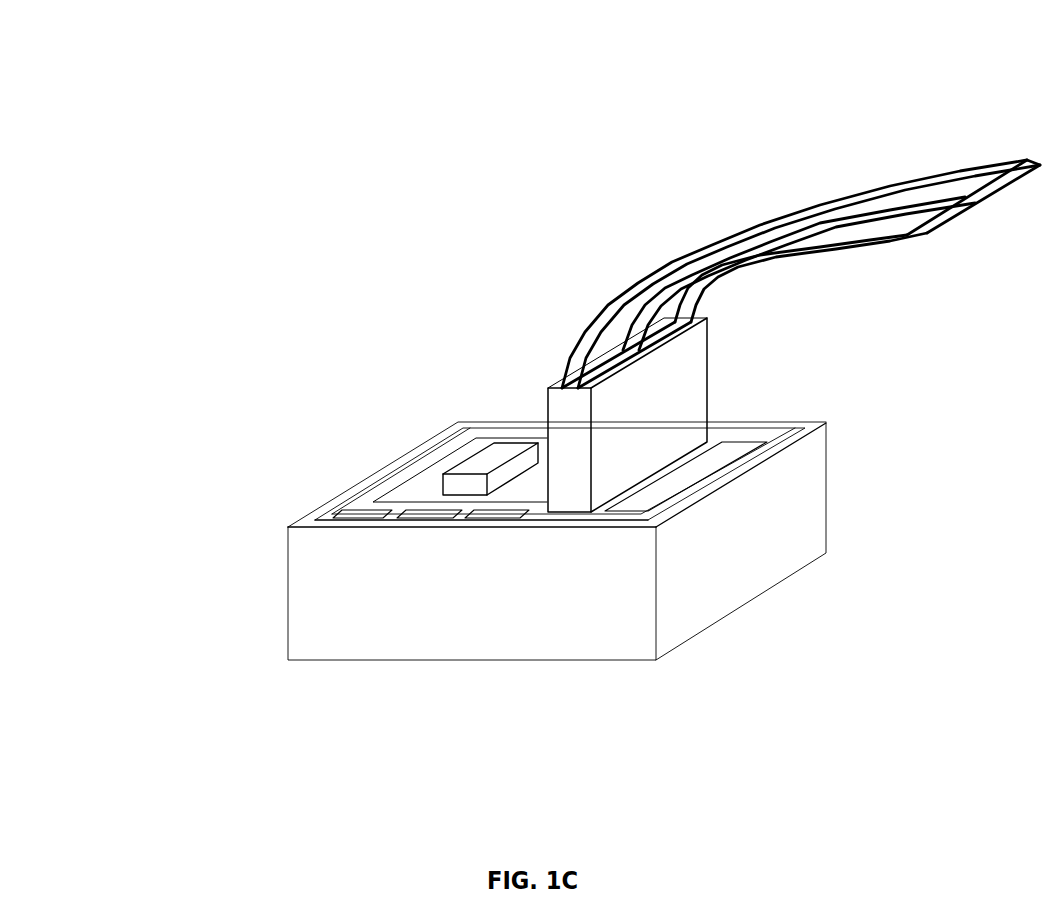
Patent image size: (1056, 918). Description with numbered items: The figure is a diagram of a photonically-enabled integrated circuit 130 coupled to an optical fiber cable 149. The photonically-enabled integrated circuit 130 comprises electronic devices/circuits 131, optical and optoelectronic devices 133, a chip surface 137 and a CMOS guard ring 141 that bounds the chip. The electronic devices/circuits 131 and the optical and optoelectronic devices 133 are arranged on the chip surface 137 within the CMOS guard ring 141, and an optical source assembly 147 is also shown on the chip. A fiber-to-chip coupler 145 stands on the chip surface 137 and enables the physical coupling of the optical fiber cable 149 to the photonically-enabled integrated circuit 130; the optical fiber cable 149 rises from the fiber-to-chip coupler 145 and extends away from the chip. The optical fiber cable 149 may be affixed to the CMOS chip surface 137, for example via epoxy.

The photonically-enabled integrated circuit 130 is at (141, 104).
The electronic devices/circuits 131 is at (482, 518).
The optical and optoelectronic devices 133 is at (460, 470).
The chip surface 137 is at (419, 470).
The CMOS guard ring 141 is at (816, 425).
The fiber-to-chip coupler 145 is at (627, 415).
The optical source assembly 147 is at (498, 452).
The optical fiber cable 149 is at (857, 188).